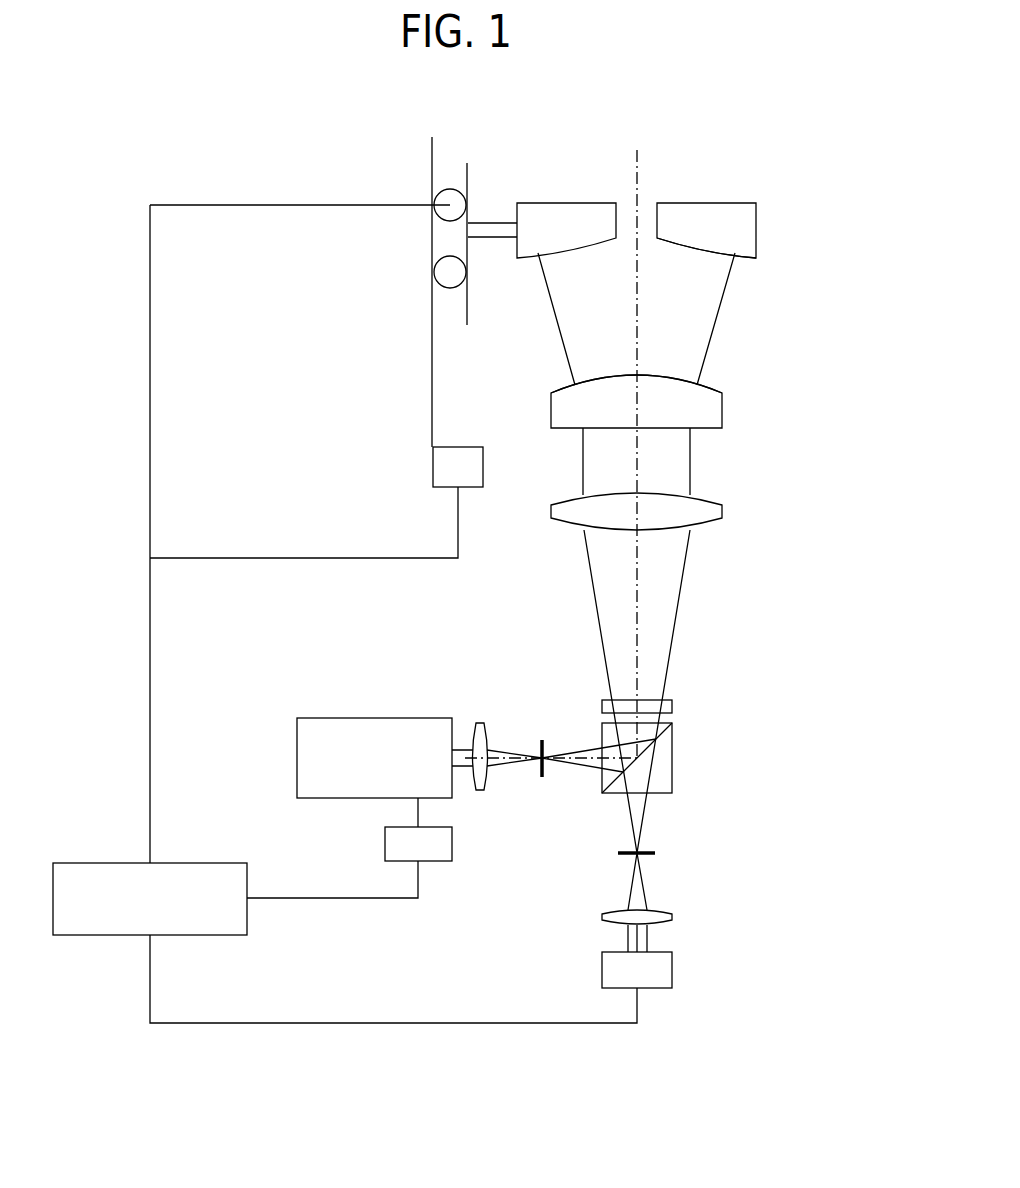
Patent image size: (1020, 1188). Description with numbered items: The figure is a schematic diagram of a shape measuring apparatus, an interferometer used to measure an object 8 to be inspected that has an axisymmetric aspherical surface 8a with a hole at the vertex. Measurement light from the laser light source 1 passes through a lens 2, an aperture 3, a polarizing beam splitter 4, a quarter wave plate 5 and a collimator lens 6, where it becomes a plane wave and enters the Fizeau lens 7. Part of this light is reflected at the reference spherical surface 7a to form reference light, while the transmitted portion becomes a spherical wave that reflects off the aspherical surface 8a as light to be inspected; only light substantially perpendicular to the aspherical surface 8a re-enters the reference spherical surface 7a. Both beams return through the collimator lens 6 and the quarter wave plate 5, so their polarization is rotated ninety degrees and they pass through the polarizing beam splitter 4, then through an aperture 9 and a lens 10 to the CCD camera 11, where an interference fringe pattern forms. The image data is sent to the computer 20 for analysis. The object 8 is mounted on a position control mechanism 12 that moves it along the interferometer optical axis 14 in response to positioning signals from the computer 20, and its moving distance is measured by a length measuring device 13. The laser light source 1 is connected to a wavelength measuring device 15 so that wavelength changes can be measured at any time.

The laser light source 1 is at (358, 718).
The lens 2 is at (482, 735).
The aperture 3 is at (543, 738).
The polarizing beam splitter 4 is at (662, 766).
The quarter wave plate 5 is at (668, 706).
The collimator lens 6 is at (713, 513).
The Fizeau lens 7 is at (713, 415).
The reference spherical surface 7a is at (710, 385).
The object to be inspected 8 is at (712, 213).
The aspherical surface to be inspected 8a is at (742, 260).
The aperture 9 is at (645, 850).
The lens 10 is at (676, 910).
The CCD camera 11 is at (665, 968).
The position control mechanism 12 is at (448, 213).
The length measuring device 13 is at (443, 468).
The interferometer optical axis 14 is at (635, 178).
The wavelength measuring device 15 is at (390, 845).
The computer 20 is at (178, 862).